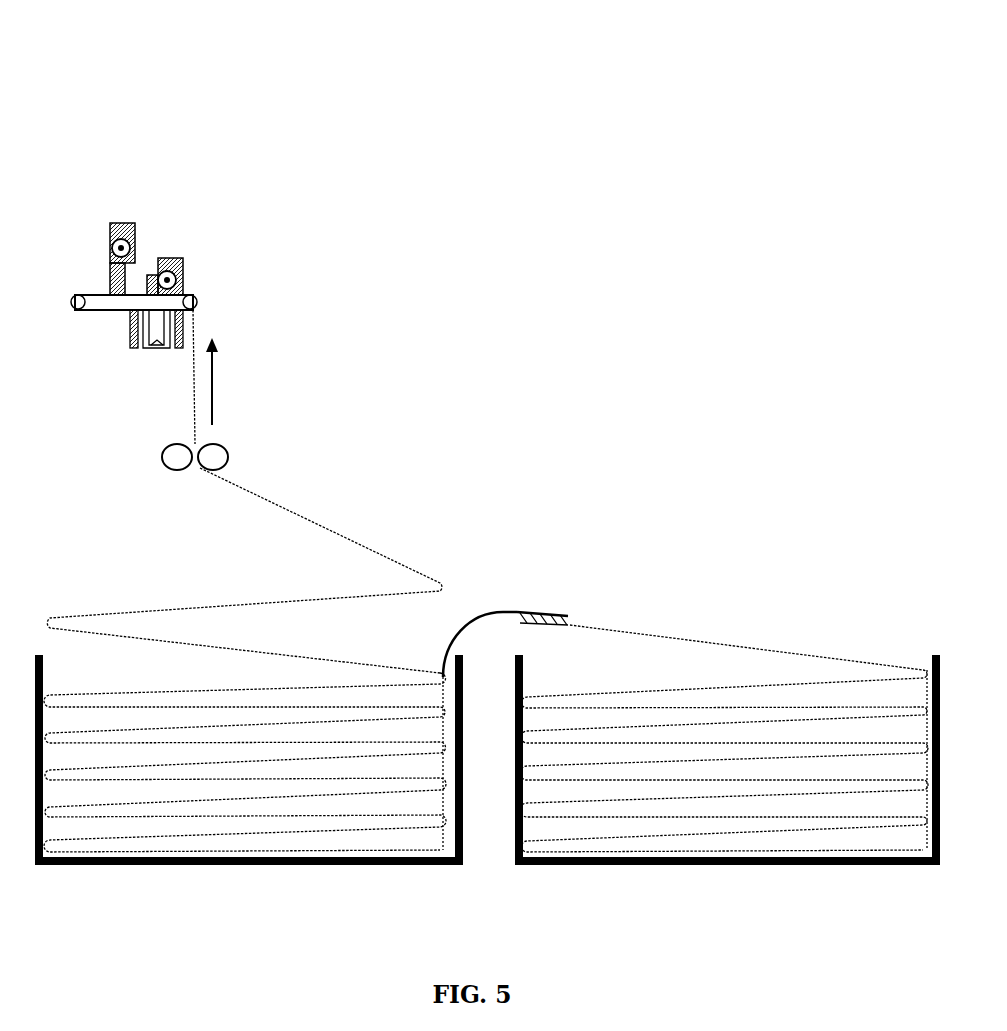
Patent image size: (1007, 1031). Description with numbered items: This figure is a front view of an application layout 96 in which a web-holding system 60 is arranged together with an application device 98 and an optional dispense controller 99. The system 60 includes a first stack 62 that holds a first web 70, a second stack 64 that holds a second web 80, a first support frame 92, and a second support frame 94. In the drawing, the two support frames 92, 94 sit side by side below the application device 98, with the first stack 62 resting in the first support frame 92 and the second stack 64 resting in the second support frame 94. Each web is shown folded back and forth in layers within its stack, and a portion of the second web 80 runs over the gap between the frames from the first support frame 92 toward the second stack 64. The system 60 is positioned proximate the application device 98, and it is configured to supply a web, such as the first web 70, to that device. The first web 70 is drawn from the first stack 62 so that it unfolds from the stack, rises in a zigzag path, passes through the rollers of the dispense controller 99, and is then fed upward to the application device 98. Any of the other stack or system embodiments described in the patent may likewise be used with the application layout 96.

The system 60 is at (617, 335).
The first stack 62 is at (397, 444).
The second stack 64 is at (680, 465).
The first web 70 is at (317, 525).
The second web 80 is at (647, 633).
The first support frame 92 is at (320, 868).
The second support frame 94 is at (663, 868).
The application layout 96 is at (466, 98).
The application device 98 is at (170, 256).
The dispense controller 99 is at (162, 447).